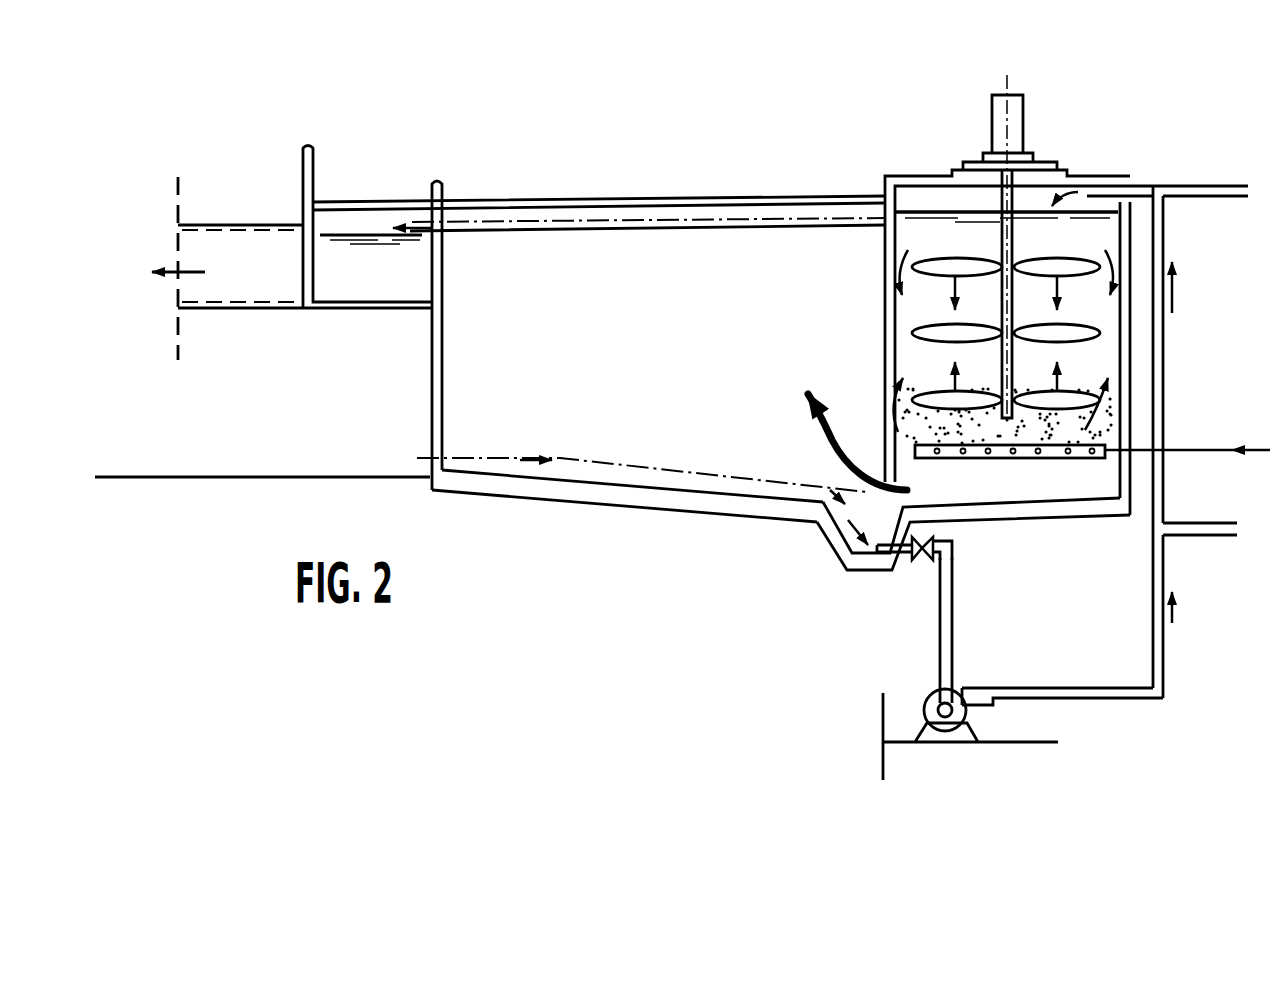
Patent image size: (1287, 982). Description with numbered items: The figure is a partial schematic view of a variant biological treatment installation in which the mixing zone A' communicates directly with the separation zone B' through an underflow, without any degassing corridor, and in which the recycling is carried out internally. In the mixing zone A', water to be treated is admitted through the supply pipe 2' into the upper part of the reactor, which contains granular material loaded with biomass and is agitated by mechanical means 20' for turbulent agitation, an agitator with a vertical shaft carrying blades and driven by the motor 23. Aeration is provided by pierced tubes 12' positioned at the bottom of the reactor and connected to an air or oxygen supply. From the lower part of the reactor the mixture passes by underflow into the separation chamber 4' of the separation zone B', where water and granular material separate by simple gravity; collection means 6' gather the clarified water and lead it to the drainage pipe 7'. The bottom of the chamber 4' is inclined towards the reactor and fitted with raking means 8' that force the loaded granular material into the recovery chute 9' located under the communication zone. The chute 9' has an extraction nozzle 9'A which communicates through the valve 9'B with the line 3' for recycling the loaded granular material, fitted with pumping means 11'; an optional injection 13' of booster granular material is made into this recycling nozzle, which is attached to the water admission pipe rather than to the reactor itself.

The supply pipe 2' is at (1150, 151).
The line for loaded granular material recycling 3' is at (1175, 469).
The separation chamber 4' is at (481, 319).
The collection means 6' is at (599, 176).
The drainage pipe for clarified water 7' is at (292, 241).
The raking means 8' is at (627, 518).
The recovery chute 9' is at (955, 498).
The extraction nozzle 9'A is at (966, 563).
The valve 9'B is at (892, 583).
The pumping means 11' is at (1023, 676).
The pierced tubes 12' is at (1075, 476).
The injection of booster granular material 13' is at (1190, 485).
The mechanical means for turbulent agitation 20' is at (1067, 253).
The motor 23 is at (990, 131).
The mixing zone A' is at (849, 674).
The separation zone B' is at (660, 682).